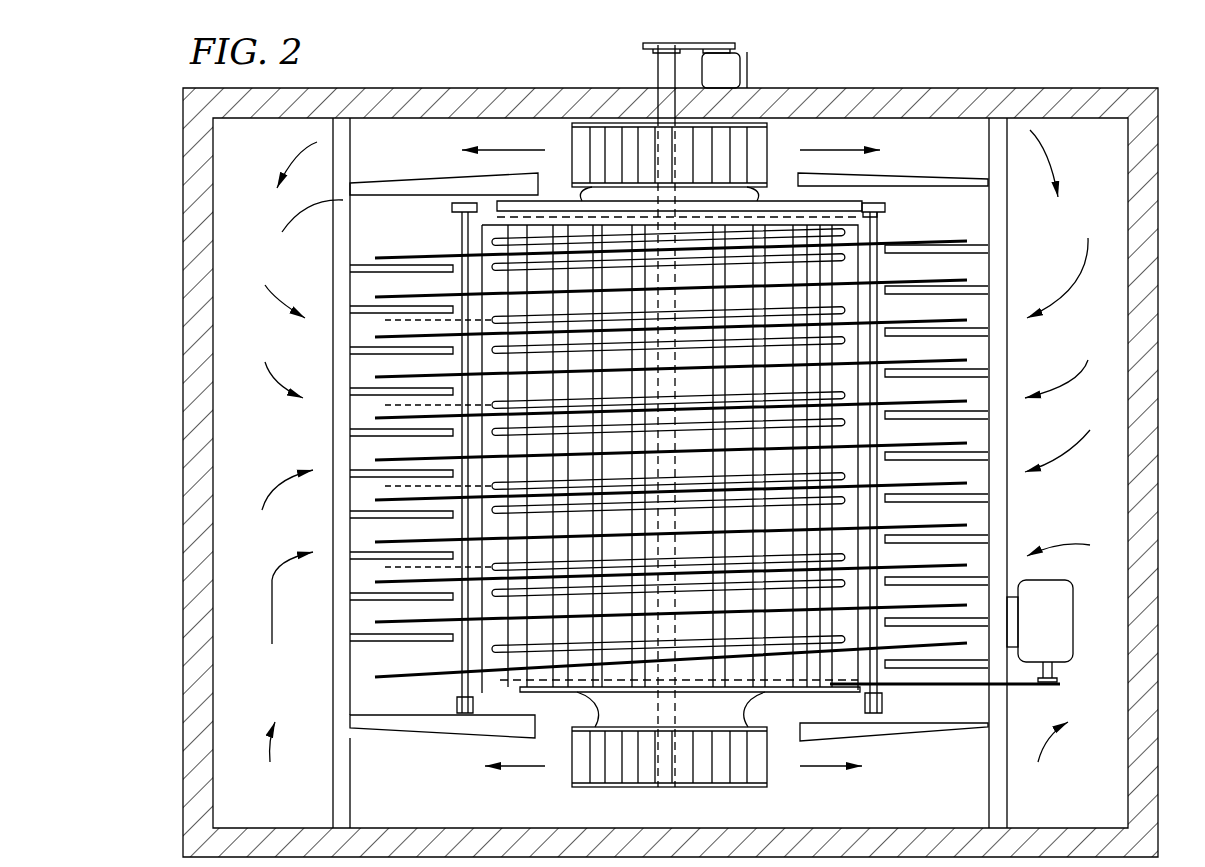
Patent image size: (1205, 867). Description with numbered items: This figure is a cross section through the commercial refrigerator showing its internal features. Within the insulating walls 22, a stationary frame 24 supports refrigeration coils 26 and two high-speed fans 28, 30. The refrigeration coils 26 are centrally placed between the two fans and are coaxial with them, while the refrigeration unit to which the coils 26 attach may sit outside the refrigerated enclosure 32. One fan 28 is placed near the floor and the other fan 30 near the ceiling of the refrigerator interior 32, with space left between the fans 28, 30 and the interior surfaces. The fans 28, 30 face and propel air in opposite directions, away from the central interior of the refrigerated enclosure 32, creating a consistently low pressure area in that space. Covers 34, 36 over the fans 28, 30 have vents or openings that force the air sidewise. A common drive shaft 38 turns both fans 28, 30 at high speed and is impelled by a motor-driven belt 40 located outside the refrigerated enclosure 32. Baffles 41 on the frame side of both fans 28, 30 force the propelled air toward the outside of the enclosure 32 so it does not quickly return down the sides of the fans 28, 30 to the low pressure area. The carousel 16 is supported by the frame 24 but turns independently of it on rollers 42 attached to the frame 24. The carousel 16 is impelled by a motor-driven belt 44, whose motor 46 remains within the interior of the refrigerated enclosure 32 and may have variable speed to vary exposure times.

The carousel 16 is at (568, 207).
The insulating walls 22 is at (185, 372).
The frame 24 is at (253, 270).
The refrigeration coils 26 is at (855, 351).
The fan 28 is at (765, 770).
The fan 30 is at (785, 135).
The refrigerated enclosure 32 is at (276, 616).
The cover 34 is at (750, 735).
The cover 36 is at (770, 160).
The drive shaft 38 is at (658, 78).
The motor-driven belt 40 is at (692, 45).
The baffles 41 is at (435, 178).
The rollers 42 is at (886, 207).
The motor-driven belt 44 is at (1015, 686).
The motor 46 is at (1062, 650).